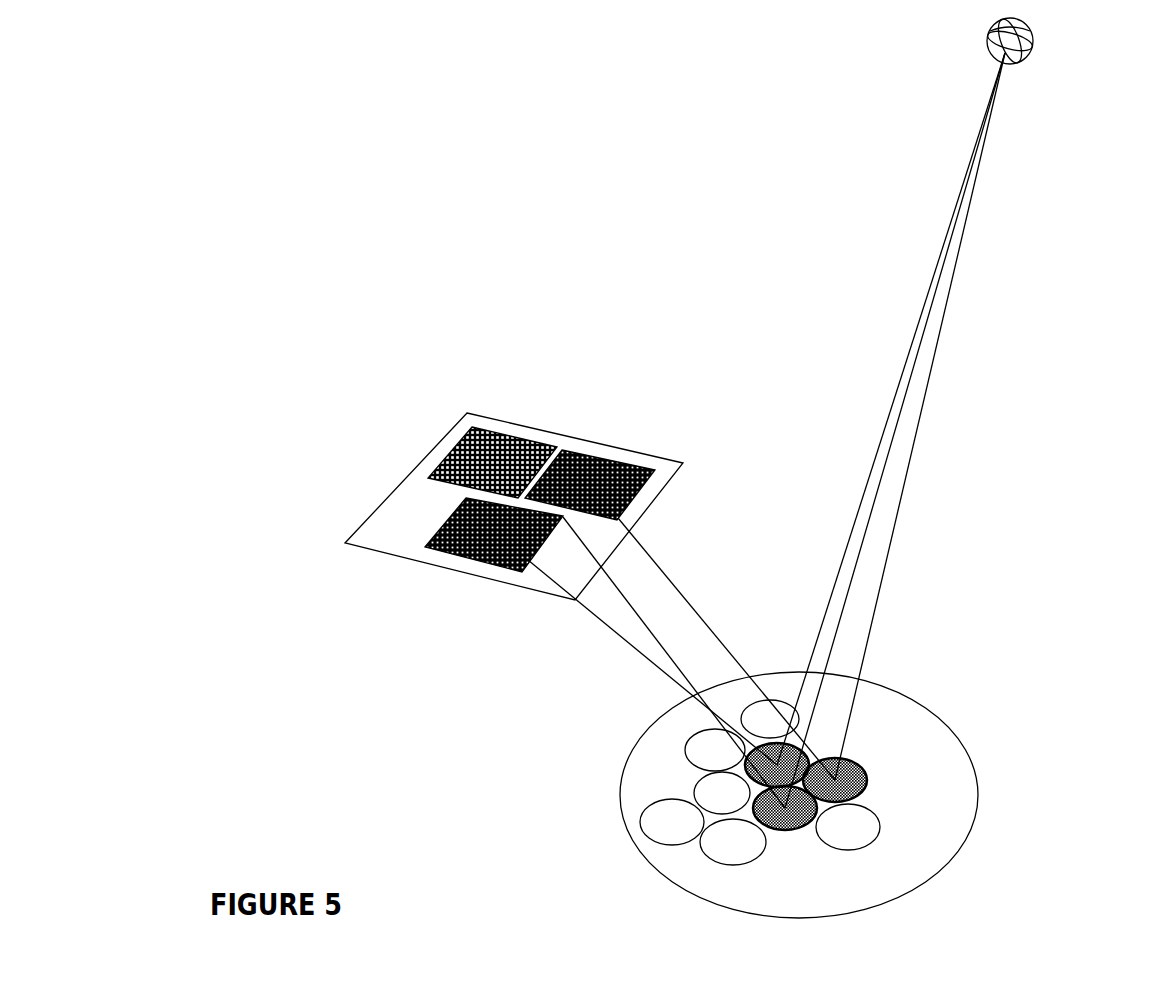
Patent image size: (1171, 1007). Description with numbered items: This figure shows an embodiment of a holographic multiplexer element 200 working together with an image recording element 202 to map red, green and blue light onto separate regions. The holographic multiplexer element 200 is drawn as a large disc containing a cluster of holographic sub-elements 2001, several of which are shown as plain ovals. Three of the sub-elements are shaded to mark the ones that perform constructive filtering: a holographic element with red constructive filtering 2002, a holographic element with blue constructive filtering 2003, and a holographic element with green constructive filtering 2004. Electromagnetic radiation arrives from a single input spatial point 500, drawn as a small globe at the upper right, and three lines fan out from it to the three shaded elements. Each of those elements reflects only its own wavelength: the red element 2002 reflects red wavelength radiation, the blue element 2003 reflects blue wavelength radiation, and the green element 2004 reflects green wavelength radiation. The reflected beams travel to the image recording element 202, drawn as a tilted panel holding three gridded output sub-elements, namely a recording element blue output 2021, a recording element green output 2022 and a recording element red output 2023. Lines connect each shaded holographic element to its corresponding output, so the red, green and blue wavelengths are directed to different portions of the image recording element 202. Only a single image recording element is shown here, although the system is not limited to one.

The holographic multiplexer element 200 is at (922, 862).
The holographic sub-elements 2001 is at (700, 752).
The holographic element with red constructive filtering 2002 is at (792, 760).
The holographic element with blue constructive filtering 2003 is at (800, 813).
The holographic element with green constructive filtering 2004 is at (860, 783).
The image recording element 202 is at (389, 550).
The recording element blue output 2021 is at (437, 533).
The recording element green output 2022 is at (563, 447).
The recording element red output 2023 is at (447, 462).
The input spatial point 500 is at (1032, 47).